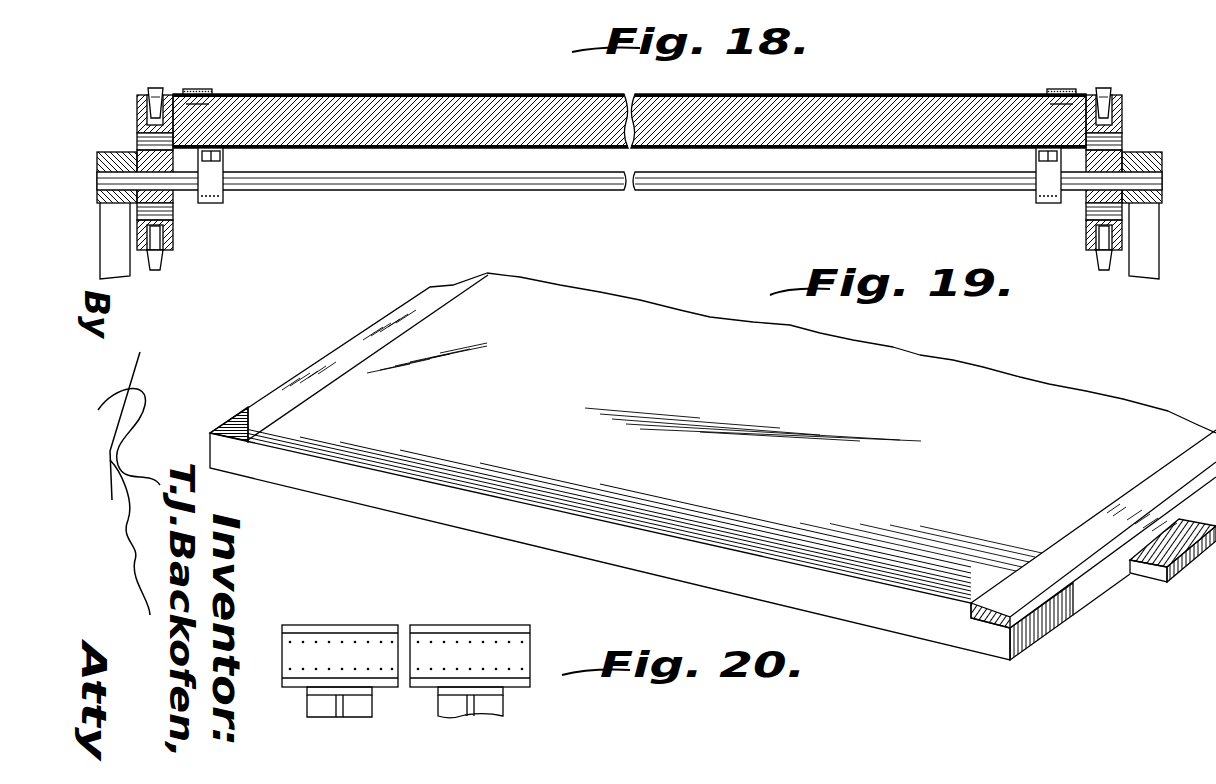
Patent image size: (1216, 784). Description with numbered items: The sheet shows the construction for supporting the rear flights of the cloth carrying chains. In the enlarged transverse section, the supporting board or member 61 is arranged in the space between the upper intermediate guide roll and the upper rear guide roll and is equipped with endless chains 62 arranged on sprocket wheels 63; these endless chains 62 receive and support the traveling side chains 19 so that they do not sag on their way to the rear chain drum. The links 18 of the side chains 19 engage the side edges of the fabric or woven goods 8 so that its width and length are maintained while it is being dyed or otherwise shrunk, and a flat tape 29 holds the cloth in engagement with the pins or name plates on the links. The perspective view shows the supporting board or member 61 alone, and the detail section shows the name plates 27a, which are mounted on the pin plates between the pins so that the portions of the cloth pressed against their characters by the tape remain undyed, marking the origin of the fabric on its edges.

In FIG. 18, the fabric or woven goods 8 is at (459, 95).
In FIG. 18, the links 18 is at (137, 102).
In FIG. 20, the links 18 is at (396, 625).
In FIG. 18, the side chains 19 is at (157, 88).
In FIG. 20, the name plates 27a is at (292, 633).
In FIG. 18, the flat tape 29 is at (203, 91).
In FIG. 18, the supporting board or member 61 is at (840, 95).
In FIG. 19, the supporting board or member 61 is at (658, 560).
In FIG. 18, the endless chains 62 is at (137, 120).
In FIG. 18, the sprocket wheels 63 is at (173, 213).